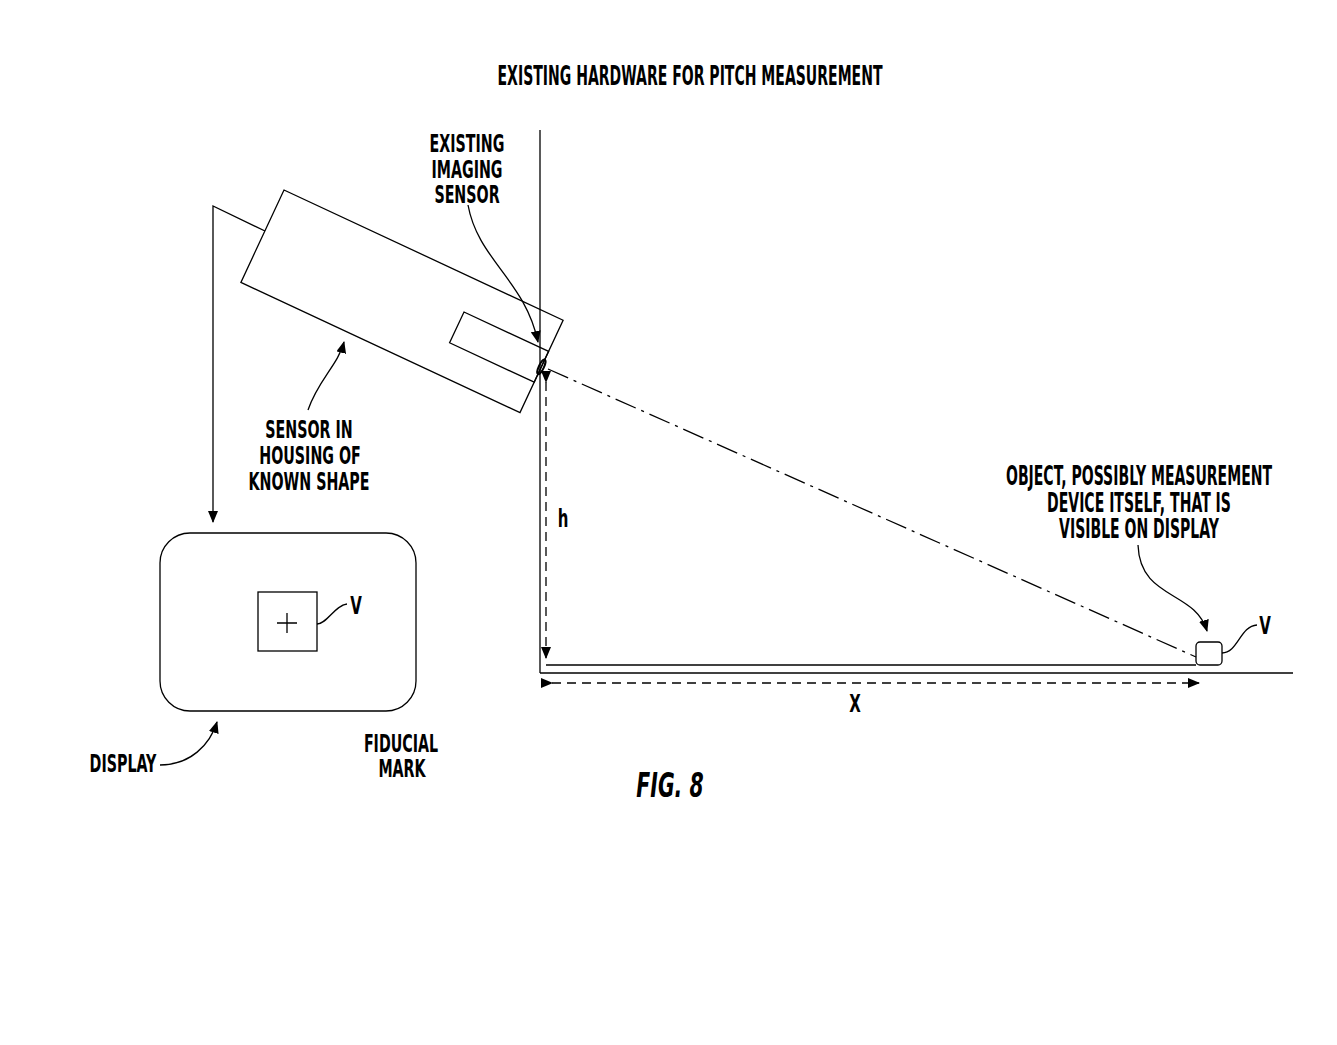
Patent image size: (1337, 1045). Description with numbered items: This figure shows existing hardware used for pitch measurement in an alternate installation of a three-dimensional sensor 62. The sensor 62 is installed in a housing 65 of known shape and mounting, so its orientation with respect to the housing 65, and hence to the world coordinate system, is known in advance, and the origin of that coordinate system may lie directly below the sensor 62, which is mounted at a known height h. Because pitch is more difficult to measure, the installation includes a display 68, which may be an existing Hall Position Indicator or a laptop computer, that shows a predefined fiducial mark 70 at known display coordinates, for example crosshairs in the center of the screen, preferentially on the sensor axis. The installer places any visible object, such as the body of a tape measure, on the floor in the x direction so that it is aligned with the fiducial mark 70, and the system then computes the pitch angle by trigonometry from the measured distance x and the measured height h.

The housing 65 is at (337, 232).
The 3D sensor 62 is at (502, 358).
The display 68 is at (415, 553).
The fiducial mark 70 is at (293, 652).